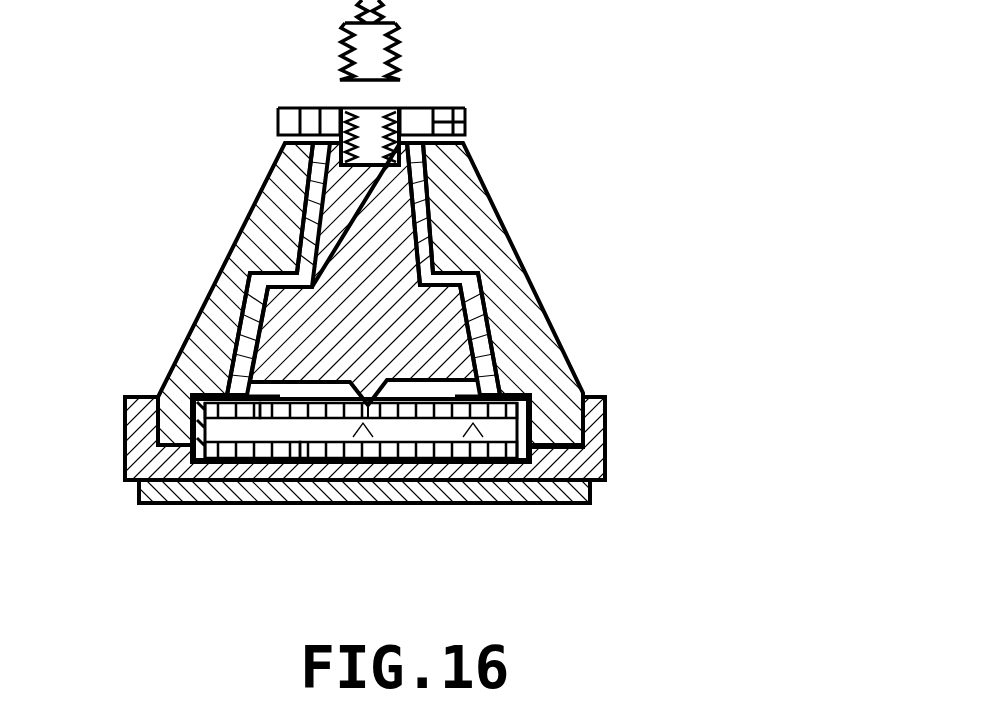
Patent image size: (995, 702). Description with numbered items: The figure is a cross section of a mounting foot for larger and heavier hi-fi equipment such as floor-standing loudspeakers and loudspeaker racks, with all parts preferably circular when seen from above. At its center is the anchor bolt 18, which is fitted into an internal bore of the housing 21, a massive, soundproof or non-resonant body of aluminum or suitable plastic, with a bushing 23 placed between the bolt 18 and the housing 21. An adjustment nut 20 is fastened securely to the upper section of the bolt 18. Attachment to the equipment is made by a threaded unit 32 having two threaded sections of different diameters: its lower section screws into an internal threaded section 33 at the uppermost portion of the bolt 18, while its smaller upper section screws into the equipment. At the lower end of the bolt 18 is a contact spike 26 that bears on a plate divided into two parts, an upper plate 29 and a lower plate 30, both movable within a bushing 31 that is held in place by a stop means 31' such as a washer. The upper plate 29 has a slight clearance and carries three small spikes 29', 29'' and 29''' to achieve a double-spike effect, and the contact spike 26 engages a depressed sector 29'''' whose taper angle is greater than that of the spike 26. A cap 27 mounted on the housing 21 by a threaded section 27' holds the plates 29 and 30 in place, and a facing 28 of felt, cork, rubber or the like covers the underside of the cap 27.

The bolt 18 is at (360, 212).
The nut 20 is at (443, 118).
The housing 21 is at (470, 252).
The bushing 23 is at (477, 305).
The contact spike 26 is at (240, 392).
The cap 27 is at (435, 438).
The threaded section 27' is at (703, 396).
The facing 28 is at (588, 500).
The upper plate 29 is at (239, 506).
The spike 29' is at (165, 469).
The spike 29'' is at (367, 490).
The spike 29''' is at (408, 530).
The depressed sector 29'''' is at (356, 499).
The lower plate 30 is at (312, 432).
The bushing 31 is at (391, 494).
The stop means 31' is at (587, 370).
The threaded unit 32 is at (371, 45).
The internal threaded section 33 is at (372, 122).